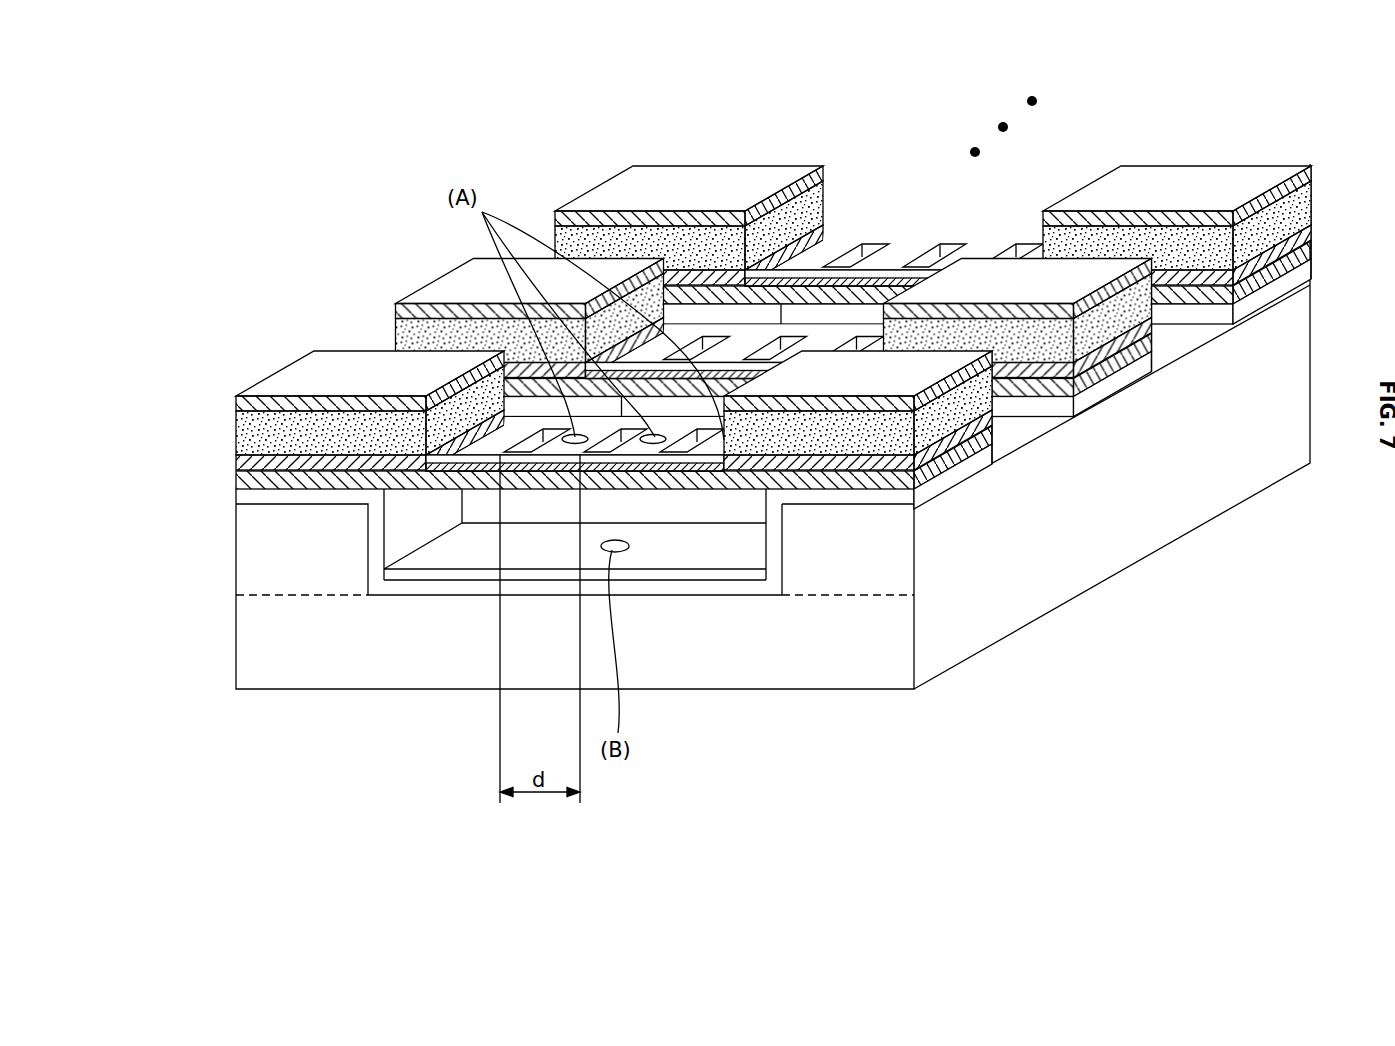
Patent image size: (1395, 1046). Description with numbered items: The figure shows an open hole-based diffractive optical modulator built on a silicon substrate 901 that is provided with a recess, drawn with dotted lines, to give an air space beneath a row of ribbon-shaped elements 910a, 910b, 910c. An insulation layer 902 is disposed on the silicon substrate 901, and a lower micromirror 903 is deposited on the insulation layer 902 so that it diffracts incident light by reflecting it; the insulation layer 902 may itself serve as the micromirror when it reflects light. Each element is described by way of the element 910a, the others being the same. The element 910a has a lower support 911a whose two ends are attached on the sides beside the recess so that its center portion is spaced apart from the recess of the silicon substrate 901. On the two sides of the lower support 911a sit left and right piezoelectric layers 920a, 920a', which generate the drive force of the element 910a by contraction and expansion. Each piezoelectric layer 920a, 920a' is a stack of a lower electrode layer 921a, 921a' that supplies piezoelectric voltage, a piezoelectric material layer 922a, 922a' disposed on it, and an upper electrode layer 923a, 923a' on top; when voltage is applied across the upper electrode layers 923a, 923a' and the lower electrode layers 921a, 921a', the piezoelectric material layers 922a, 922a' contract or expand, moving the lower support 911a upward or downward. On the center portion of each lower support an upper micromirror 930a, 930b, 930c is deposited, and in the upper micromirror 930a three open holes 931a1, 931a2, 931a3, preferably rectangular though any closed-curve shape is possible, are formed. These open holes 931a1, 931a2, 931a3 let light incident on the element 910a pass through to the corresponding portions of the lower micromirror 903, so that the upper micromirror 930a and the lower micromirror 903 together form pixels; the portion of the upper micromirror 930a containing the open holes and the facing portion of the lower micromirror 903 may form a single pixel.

The silicon substrate 901 is at (763, 680).
The insulation layer 902 is at (668, 586).
The lower micromirror 903 is at (458, 573).
The element 910a is at (278, 372).
The element 910b is at (448, 291).
The element 910c is at (593, 186).
The lower support 911a is at (240, 482).
The piezoelectric layer 920a is at (262, 351).
The lower electrode layer 921a is at (277, 392).
The piezoelectric material layer 922a is at (290, 366).
The upper electrode layer 923a is at (309, 331).
The piezoelectric layer 920a' is at (1002, 521).
The lower electrode layer 921a' is at (940, 544).
The piezoelectric material layer 922a' is at (966, 503).
The upper electrode layer 923a' is at (989, 477).
The upper micromirror 930a is at (603, 282).
The upper micromirror 930b is at (640, 372).
The upper micromirror 930c is at (792, 280).
The open hole 931a1 is at (543, 436).
The open hole 931a2 is at (623, 430).
The open hole 931a3 is at (710, 427).